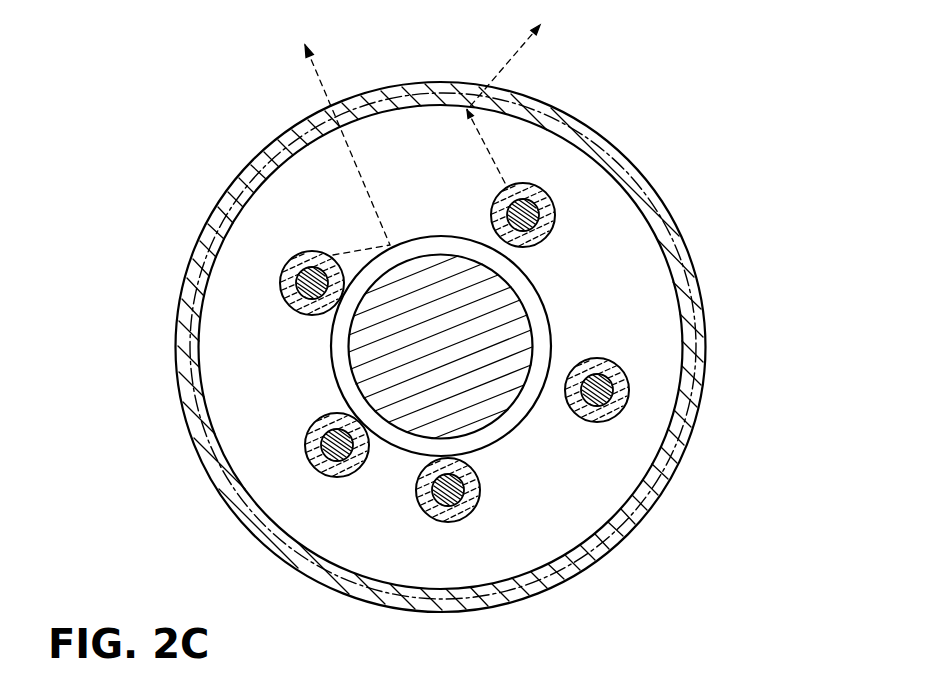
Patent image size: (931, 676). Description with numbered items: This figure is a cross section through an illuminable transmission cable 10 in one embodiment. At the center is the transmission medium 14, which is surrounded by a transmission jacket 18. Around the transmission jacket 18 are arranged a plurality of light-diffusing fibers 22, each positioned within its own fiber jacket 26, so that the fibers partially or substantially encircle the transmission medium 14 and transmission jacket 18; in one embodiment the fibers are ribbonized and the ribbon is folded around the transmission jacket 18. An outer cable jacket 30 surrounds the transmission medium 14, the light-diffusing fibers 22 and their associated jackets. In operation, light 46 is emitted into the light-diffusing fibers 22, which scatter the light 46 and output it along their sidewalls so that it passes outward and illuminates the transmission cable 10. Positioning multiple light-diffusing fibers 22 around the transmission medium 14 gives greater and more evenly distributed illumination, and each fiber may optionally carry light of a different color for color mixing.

The transmission cable 10 is at (215, 162).
The transmission medium 14 is at (500, 348).
The transmission jacket 18 is at (528, 303).
The light-diffusing fiber 22 is at (550, 200).
The fiber jacket 26 is at (533, 185).
The cable jacket 30 is at (668, 228).
The light 46 is at (317, 84).